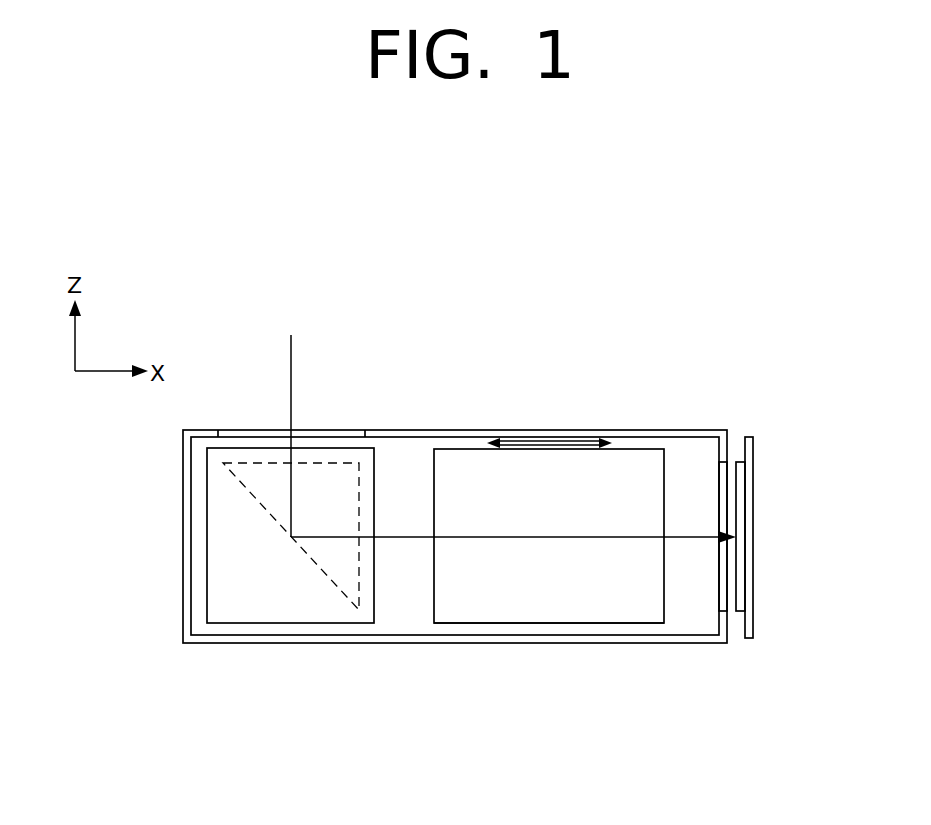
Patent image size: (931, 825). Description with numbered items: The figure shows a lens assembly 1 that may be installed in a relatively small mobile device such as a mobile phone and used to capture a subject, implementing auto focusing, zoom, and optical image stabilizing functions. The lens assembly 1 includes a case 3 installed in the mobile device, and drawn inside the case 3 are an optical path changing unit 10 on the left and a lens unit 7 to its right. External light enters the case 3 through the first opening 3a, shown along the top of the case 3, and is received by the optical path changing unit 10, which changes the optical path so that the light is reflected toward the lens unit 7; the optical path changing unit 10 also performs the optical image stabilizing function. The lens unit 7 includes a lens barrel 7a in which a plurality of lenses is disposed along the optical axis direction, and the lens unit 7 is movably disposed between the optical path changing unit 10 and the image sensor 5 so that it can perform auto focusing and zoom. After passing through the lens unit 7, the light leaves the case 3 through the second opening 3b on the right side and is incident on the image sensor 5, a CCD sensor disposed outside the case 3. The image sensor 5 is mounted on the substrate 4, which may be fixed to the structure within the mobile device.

The lens assembly 1 is at (472, 194).
The case 3 is at (651, 430).
The first opening 3a is at (340, 433).
The second opening 3b is at (722, 583).
The substrate 4 is at (752, 479).
The image sensor 5 is at (743, 586).
The lens unit 7 is at (549, 644).
The lens barrel 7a is at (476, 612).
The optical path changing unit 10 is at (292, 644).